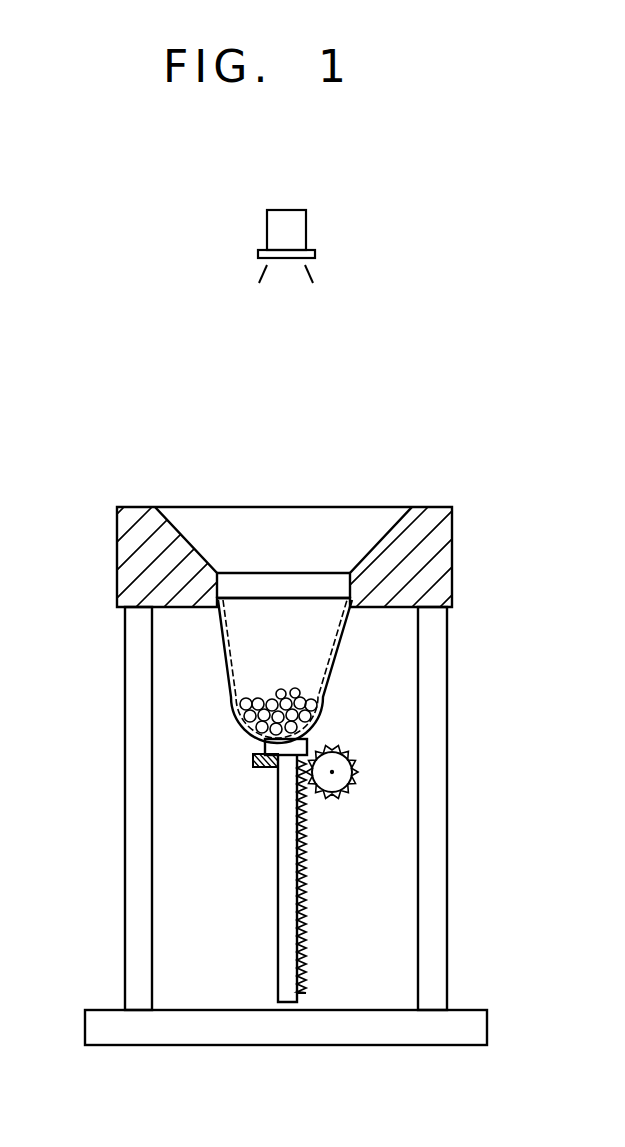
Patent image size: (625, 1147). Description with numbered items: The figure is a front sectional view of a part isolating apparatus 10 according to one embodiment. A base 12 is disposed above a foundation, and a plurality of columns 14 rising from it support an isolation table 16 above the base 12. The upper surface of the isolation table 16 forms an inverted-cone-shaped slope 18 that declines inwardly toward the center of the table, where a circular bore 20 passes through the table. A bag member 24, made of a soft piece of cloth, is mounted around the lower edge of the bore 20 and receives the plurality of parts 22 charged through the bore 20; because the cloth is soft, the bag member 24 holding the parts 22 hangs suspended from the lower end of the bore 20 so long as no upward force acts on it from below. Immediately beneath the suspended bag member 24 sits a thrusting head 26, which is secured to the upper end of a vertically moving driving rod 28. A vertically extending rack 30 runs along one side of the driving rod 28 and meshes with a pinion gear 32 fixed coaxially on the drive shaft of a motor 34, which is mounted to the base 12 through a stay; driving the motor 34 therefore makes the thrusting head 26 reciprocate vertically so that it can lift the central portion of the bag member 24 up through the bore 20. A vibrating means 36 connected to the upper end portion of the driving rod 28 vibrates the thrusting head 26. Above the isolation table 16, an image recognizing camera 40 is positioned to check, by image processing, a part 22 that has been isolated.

The part isolating apparatus 10 is at (479, 487).
The base 12 is at (412, 1030).
The columns 14 is at (130, 910).
The isolation table 16 is at (130, 556).
The inverted-cone-shaped slope 18 is at (197, 548).
The circular bore 20 is at (245, 587).
The parts 22 is at (342, 692).
The bag member 24 is at (348, 640).
The thrusting head 26 is at (330, 737).
The driving rod 28 is at (285, 818).
The rack 30 is at (308, 952).
The pinion gear 32 is at (338, 800).
The motor 34 is at (338, 772).
The vibrating means 36 is at (252, 762).
The image recognizing camera 40 is at (272, 237).